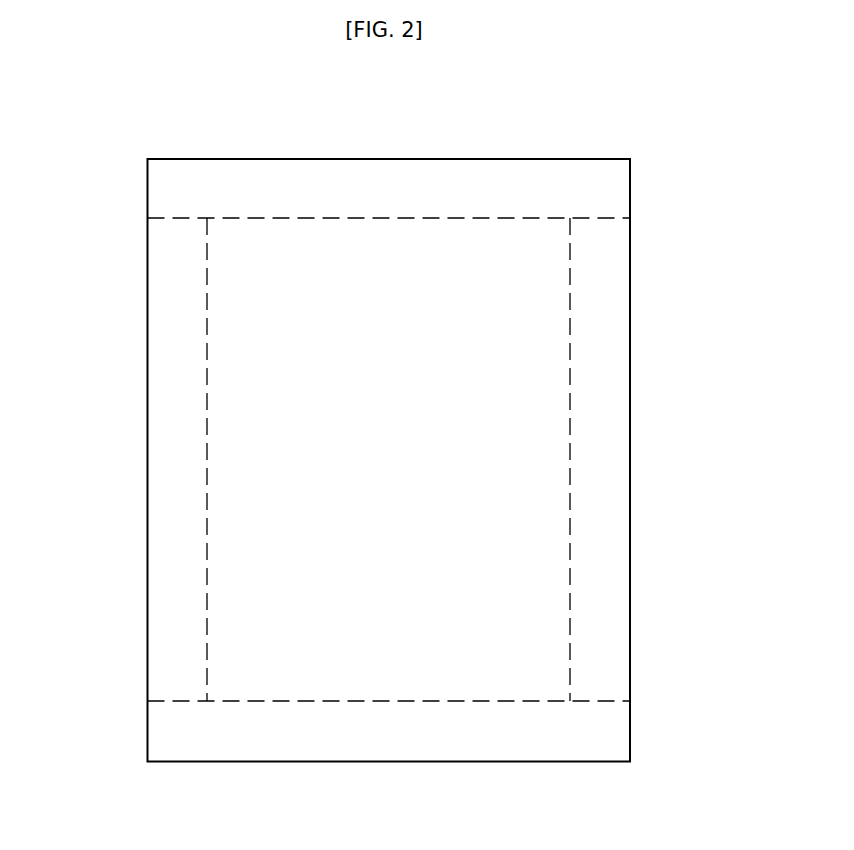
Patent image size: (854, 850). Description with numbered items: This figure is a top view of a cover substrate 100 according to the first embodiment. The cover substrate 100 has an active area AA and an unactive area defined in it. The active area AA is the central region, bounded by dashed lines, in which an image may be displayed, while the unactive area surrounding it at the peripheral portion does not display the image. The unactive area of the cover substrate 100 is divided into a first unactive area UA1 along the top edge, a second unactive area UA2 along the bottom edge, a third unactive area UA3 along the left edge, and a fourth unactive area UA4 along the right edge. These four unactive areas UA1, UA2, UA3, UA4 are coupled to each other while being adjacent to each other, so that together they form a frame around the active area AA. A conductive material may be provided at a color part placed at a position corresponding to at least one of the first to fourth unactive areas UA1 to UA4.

The cover substrate 100 is at (147, 376).
The active area AA is at (555, 350).
The first unactive area UA1 is at (378, 173).
The second unactive area UA2 is at (391, 745).
The third unactive area UA3 is at (165, 488).
The fourth unactive area UA4 is at (610, 476).